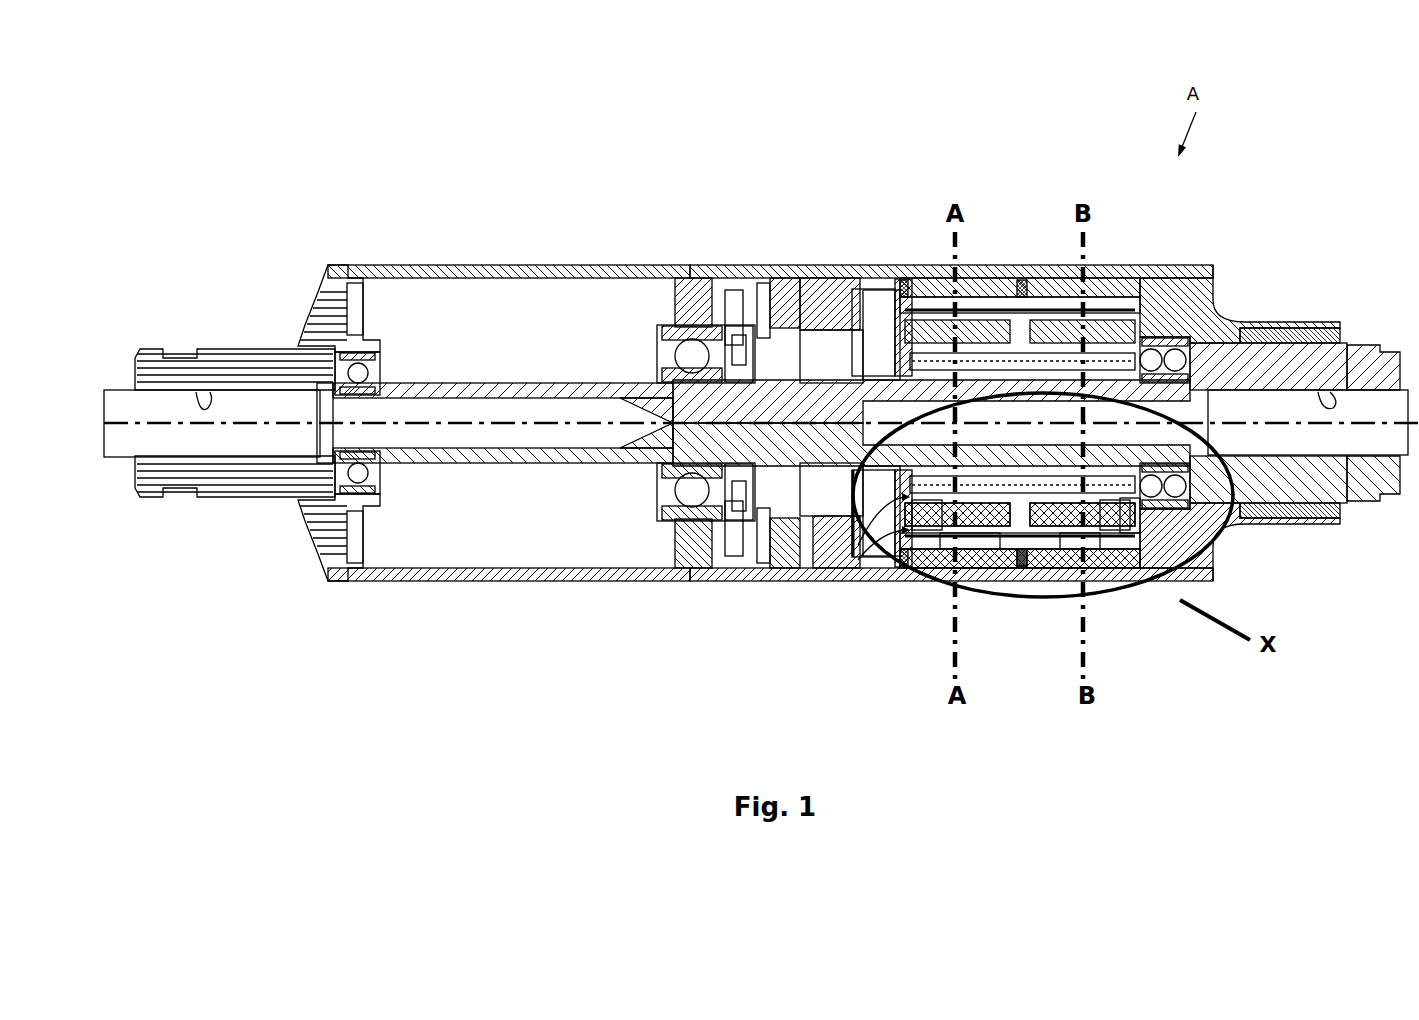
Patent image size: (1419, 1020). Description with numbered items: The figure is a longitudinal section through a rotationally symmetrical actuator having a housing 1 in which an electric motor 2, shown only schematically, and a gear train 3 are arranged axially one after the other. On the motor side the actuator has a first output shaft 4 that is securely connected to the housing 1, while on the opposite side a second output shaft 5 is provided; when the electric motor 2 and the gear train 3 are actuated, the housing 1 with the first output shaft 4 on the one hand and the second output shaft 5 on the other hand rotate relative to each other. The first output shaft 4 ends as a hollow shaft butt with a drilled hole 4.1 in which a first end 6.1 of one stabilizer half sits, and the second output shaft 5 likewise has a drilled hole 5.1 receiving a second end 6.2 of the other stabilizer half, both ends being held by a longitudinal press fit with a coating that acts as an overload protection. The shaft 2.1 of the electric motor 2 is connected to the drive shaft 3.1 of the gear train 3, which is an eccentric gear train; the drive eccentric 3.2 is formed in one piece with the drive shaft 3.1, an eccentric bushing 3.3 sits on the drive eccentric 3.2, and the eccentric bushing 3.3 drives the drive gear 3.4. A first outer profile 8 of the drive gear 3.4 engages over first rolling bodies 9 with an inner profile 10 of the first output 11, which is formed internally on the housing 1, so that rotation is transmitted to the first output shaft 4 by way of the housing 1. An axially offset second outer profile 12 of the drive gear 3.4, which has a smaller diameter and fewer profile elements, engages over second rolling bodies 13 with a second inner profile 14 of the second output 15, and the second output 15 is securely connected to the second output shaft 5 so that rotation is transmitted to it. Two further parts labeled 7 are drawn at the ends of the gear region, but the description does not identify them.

The housing 1 is at (1164, 247).
The electric motor 2 is at (685, 186).
The shaft of the electric motor 2.1 is at (545, 386).
The gear train 3 is at (707, 188).
The drive shaft 3.1 is at (795, 402).
The drive eccentric 3.2 is at (850, 463).
The eccentric bushing 3.3 is at (845, 527).
The drive gear 3.4 is at (875, 552).
The first output shaft 4 is at (267, 350).
The drilled hole 4.1 is at (206, 404).
The second output shaft 5 is at (1283, 387).
The drilled hole 5.1 is at (1328, 392).
The first end 6.1 is at (115, 405).
The second end 6.2 is at (1370, 413).
The coil end winding 7 is at (922, 530).
The first outer profile 8 is at (963, 522).
The first rolling bodies 9 is at (967, 545).
The inner profile 10 is at (1007, 555).
The first output 11 is at (933, 552).
The second outer profile 12 is at (1053, 540).
The second rolling bodies 13 is at (1037, 528).
The second inner profile 14 is at (1073, 537).
The second output 15 is at (1133, 523).